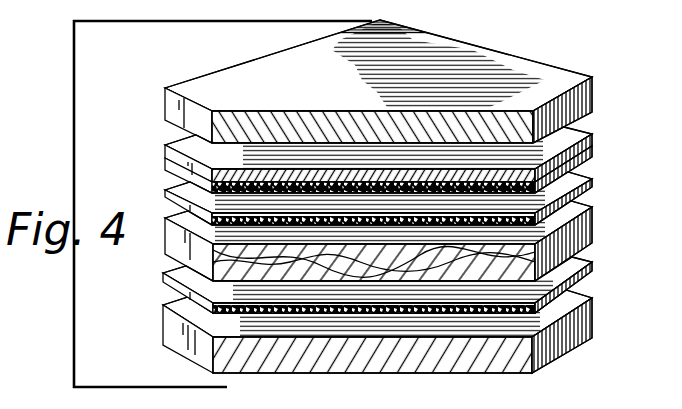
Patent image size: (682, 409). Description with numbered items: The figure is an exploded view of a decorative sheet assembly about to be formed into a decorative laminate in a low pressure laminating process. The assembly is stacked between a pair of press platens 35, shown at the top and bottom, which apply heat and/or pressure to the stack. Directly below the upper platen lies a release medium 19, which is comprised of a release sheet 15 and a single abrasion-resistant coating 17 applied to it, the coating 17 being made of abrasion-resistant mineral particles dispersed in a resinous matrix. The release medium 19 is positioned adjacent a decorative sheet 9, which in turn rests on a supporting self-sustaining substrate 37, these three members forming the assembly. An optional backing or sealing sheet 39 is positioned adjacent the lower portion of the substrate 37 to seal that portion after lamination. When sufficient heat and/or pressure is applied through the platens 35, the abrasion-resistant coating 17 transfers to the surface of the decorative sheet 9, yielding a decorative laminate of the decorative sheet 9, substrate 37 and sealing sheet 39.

The press platens 35 is at (593, 92).
The release medium 19 is at (376, 155).
The release sheet 15 is at (165, 151).
The abrasion-resistant coating 17 is at (165, 161).
The decorative sheet 9 is at (593, 182).
The self-sustaining substrate 37 is at (595, 232).
The backing or sealing sheet 39 is at (593, 272).